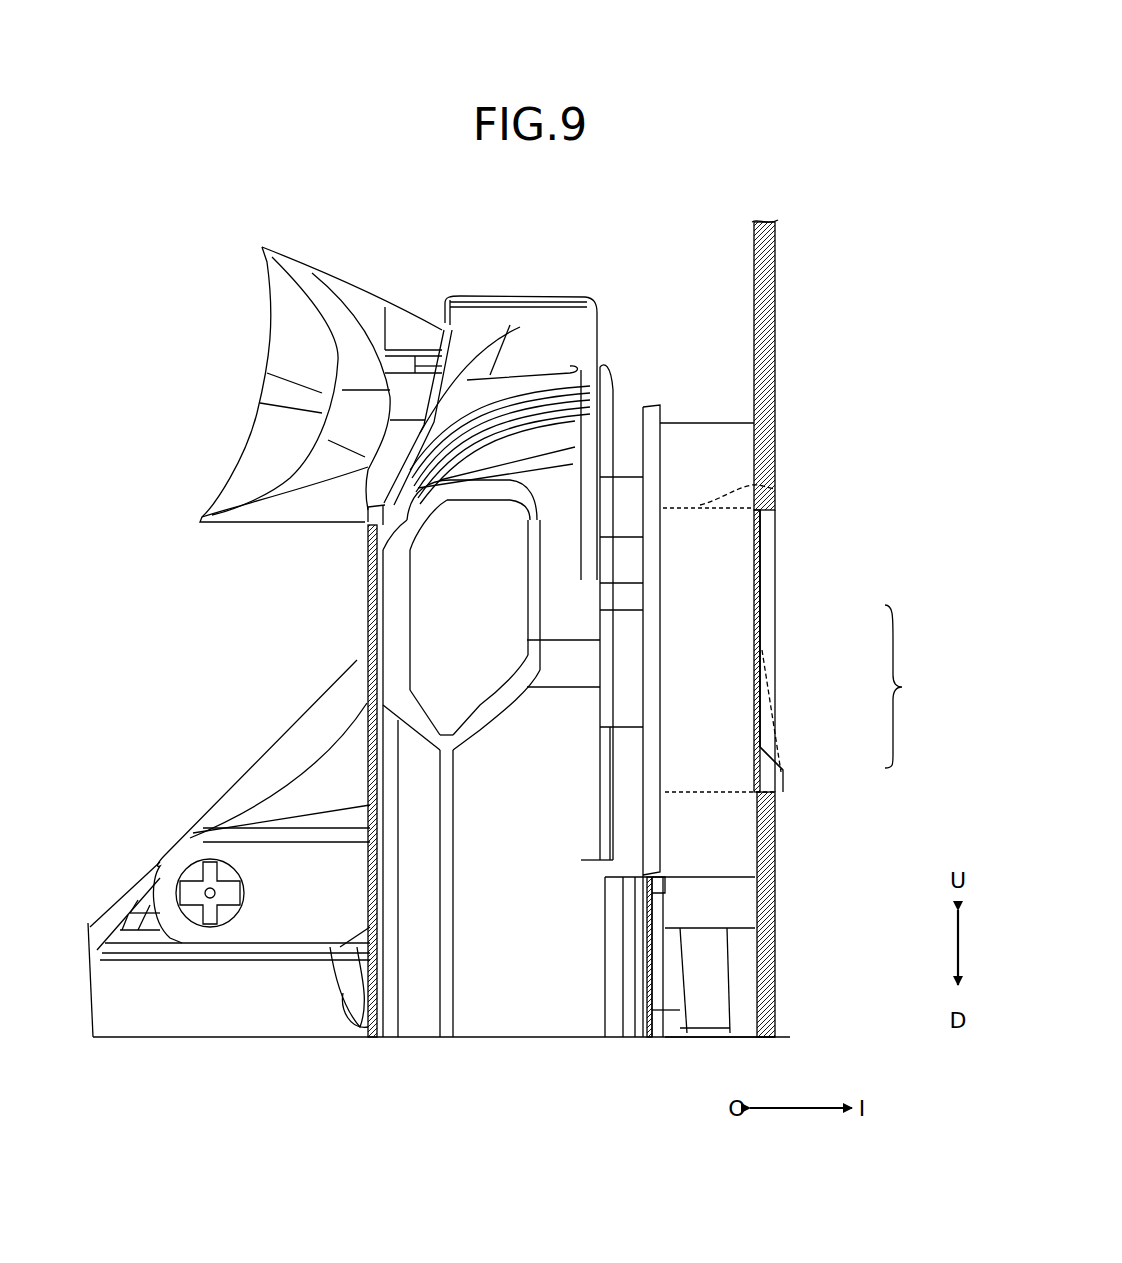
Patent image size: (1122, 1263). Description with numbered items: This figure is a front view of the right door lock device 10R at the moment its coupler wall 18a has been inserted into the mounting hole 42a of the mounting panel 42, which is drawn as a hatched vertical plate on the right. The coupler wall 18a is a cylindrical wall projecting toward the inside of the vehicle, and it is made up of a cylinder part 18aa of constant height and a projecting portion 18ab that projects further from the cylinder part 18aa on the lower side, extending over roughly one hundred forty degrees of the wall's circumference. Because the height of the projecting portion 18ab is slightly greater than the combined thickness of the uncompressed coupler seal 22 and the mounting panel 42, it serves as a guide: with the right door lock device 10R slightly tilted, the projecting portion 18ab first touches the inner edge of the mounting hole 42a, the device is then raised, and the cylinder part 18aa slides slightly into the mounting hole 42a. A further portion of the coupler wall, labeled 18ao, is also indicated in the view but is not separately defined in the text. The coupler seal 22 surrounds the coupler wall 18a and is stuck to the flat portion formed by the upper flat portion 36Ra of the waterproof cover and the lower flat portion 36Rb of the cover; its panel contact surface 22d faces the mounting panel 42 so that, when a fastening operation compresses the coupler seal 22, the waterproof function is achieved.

The right door lock device 10R is at (535, 266).
The mounting panel 42 is at (754, 318).
The mounting hole 42a is at (775, 508).
The coupler seal 22 is at (708, 435).
The panel contact surface 22d is at (760, 820).
The coupler wall 18a is at (853, 651).
The cylinder part 18aa is at (762, 625).
The projecting portion 18ab is at (770, 745).
The outer surface of flange 18ao is at (775, 489).
The upper flat portion 36Ra is at (660, 410).
The lower flat portion 36Rb is at (665, 856).